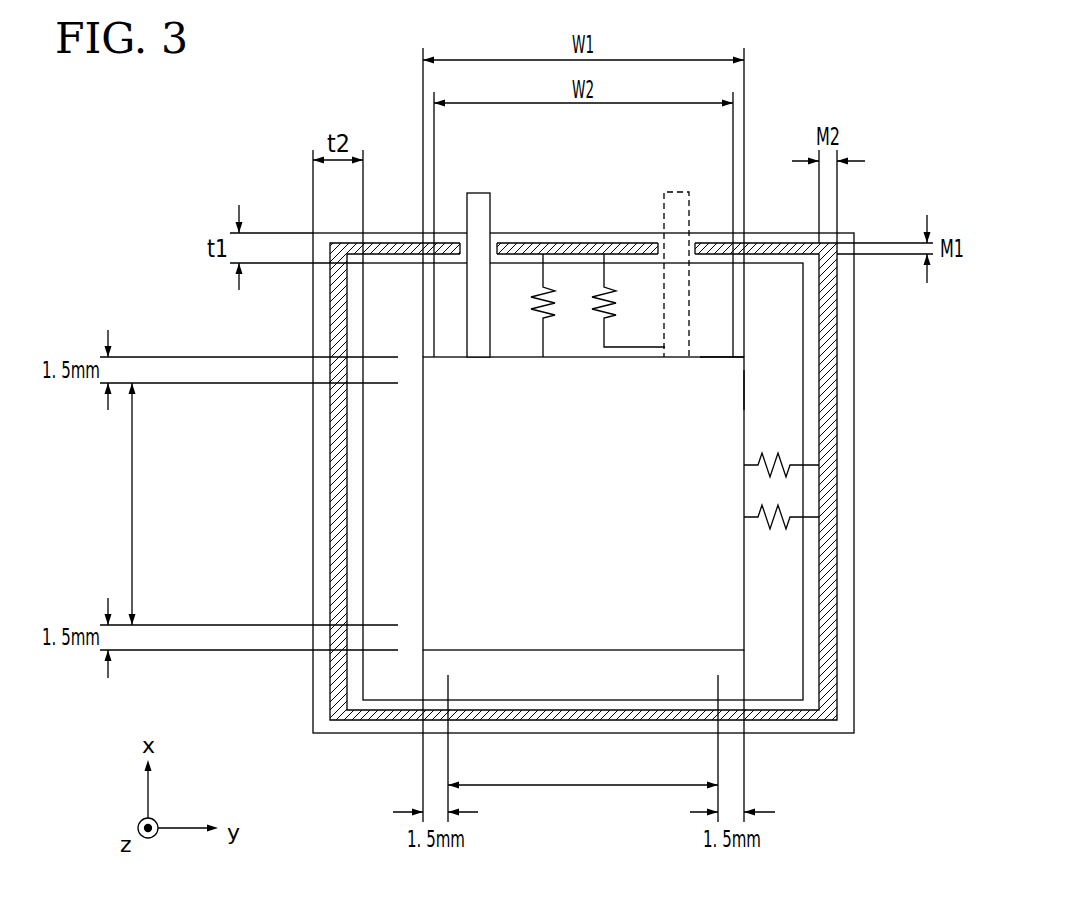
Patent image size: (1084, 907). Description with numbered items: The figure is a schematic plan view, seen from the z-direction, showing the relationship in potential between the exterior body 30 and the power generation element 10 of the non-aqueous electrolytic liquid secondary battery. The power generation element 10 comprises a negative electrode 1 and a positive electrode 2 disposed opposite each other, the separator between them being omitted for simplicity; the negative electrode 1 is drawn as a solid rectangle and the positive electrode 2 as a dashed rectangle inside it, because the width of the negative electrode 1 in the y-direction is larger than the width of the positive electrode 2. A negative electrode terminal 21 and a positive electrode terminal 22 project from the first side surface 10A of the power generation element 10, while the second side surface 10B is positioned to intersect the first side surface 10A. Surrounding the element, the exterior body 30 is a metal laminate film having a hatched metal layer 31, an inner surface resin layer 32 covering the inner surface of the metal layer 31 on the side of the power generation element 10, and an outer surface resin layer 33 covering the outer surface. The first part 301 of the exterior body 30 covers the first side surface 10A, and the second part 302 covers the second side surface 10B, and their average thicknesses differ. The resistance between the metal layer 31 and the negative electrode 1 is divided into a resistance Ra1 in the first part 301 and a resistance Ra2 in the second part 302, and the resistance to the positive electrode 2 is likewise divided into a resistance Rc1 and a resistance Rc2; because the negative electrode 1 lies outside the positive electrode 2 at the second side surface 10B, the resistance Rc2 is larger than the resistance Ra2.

The negative electrode 1 is at (423, 408).
The positive electrode 2 is at (433, 445).
The power generation element 10 is at (593, 389).
The first side surface 10A is at (712, 357).
The second side surface 10B is at (744, 388).
The negative electrode terminal 21 is at (478, 193).
The positive electrode terminal 22 is at (677, 192).
The exterior body 30 is at (503, 483).
The metal layer 31 is at (338, 558).
The inner surface resin layer 32 is at (357, 522).
The outer surface resin layer 33 is at (320, 592).
The resistance between metal layer and negative electrode in first part Ra1 is at (534, 292).
The resistance between metal layer and positive electrode in first part Rc1 is at (595, 292).
The resistance between metal layer and negative electrode in second part Ra2 is at (792, 475).
The resistance between metal layer and positive electrode in second part Rc2 is at (792, 526).
The first part 301 is at (583, 799).
The second part 302 is at (114, 504).